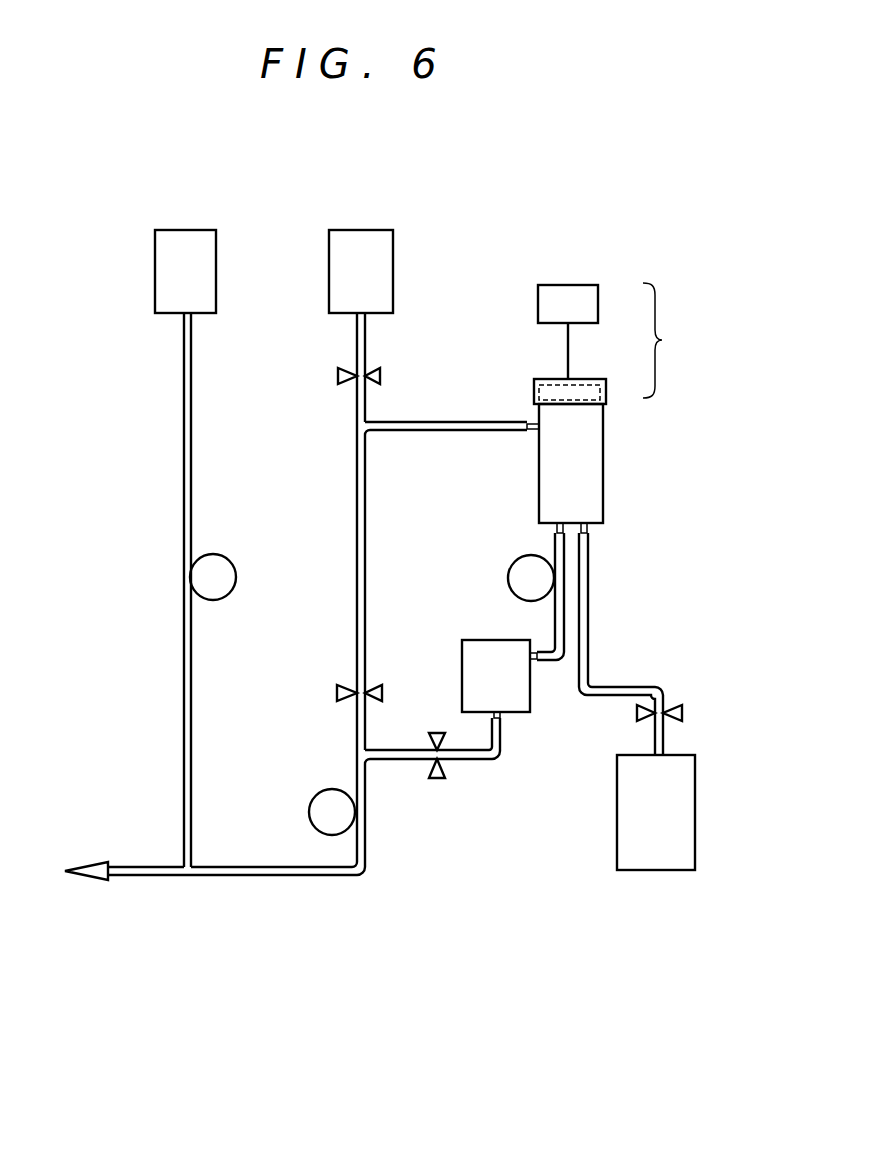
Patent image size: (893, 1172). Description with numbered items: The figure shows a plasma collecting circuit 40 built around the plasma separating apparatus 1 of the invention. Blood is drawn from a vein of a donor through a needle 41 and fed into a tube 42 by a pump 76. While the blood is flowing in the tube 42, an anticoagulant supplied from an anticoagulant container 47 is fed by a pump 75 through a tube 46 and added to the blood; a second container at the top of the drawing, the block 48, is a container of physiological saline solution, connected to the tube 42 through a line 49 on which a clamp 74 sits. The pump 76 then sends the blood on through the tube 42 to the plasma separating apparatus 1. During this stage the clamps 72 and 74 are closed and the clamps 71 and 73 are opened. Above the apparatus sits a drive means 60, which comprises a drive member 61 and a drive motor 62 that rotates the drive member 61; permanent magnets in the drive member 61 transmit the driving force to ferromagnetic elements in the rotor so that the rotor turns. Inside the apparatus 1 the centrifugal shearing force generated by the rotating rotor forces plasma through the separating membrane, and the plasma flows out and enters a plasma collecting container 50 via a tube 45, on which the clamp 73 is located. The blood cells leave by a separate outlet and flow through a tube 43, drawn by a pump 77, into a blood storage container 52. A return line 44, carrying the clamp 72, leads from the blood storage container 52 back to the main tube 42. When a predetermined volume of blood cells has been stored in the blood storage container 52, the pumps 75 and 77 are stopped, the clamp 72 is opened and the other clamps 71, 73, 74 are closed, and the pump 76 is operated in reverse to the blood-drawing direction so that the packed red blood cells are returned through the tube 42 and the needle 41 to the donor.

The plasma separating apparatus 1 is at (596, 458).
The plasma collecting circuit 40 is at (194, 890).
The needle 41 is at (85, 861).
The tube 42 is at (448, 421).
The tube 43 is at (547, 662).
The pipe 44 is at (477, 761).
The tube 45 is at (589, 568).
The tube 46 is at (183, 393).
The anticoagulant container 47 is at (172, 230).
The container of physiological saline solution 48 is at (356, 230).
The pipe 49 is at (356, 333).
The plasma collecting container 50 is at (696, 810).
The blood storage container 52 is at (485, 640).
The drive means 60 is at (632, 340).
The drive member 61 is at (550, 378).
The drive motor 62 is at (573, 285).
The clamp 71 is at (337, 693).
The clamp 72 is at (438, 780).
The clamp 73 is at (684, 712).
The clamp 74 is at (338, 376).
The pump 75 is at (228, 554).
The pump 76 is at (310, 813).
The pump 77 is at (538, 556).